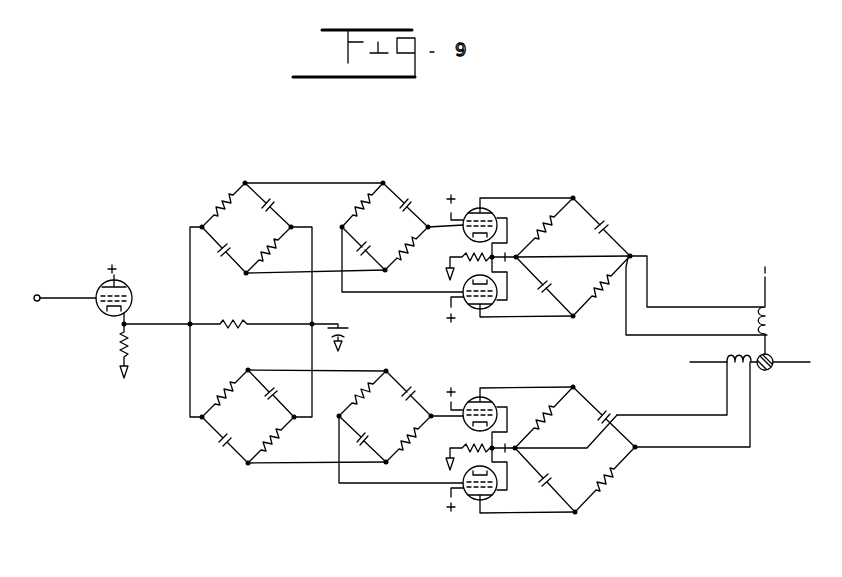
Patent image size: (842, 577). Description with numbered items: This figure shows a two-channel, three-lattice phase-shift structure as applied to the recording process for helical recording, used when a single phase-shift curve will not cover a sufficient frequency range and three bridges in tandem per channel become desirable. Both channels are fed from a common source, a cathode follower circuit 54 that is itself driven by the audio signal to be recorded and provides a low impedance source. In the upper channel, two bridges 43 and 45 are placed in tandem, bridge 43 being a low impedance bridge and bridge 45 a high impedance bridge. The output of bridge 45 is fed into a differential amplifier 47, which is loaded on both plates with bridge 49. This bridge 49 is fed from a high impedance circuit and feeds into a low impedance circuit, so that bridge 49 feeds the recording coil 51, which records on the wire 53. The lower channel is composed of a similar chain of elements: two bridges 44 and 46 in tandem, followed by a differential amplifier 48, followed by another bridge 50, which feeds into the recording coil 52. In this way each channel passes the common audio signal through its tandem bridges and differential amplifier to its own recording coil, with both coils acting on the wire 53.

The bridge 43 is at (241, 203).
The bridge 44 is at (240, 457).
The bridge 45 is at (395, 195).
The bridge 46 is at (382, 447).
The differential amplifier 47 is at (493, 212).
The differential amplifier 48 is at (495, 403).
The bridge 49 is at (578, 208).
The bridge 50 is at (622, 453).
The recording coil 51 is at (770, 310).
The recording coil 52 is at (740, 378).
The wire 53 is at (773, 350).
The cathode follower circuit 54 is at (133, 285).